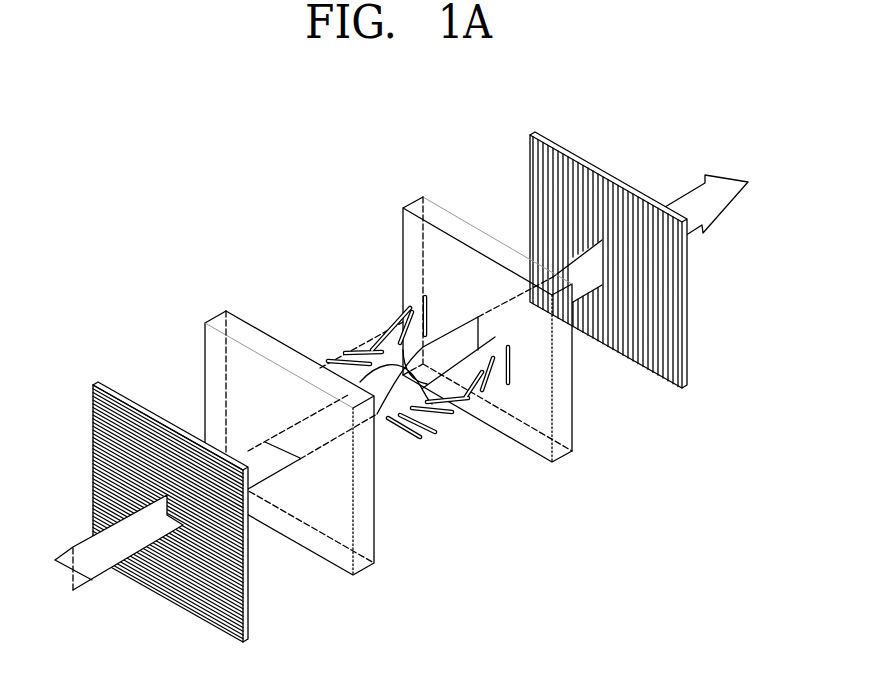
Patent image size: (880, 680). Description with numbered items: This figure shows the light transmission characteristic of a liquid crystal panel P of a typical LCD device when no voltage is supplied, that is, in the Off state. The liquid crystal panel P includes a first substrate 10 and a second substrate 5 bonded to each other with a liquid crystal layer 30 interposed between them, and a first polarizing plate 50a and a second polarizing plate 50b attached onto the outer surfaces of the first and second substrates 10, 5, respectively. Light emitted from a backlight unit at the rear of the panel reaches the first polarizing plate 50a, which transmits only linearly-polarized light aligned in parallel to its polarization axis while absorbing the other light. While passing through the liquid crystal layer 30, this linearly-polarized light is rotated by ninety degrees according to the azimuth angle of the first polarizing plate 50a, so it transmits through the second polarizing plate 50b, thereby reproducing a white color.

The first polarizing plate 50a is at (248, 627).
The second polarizing plate 50b is at (687, 378).
The first substrate 10 is at (375, 558).
The second substrate 5 is at (573, 443).
The liquid crystal layer 30 is at (420, 437).
The liquid crystal panel P is at (627, 479).